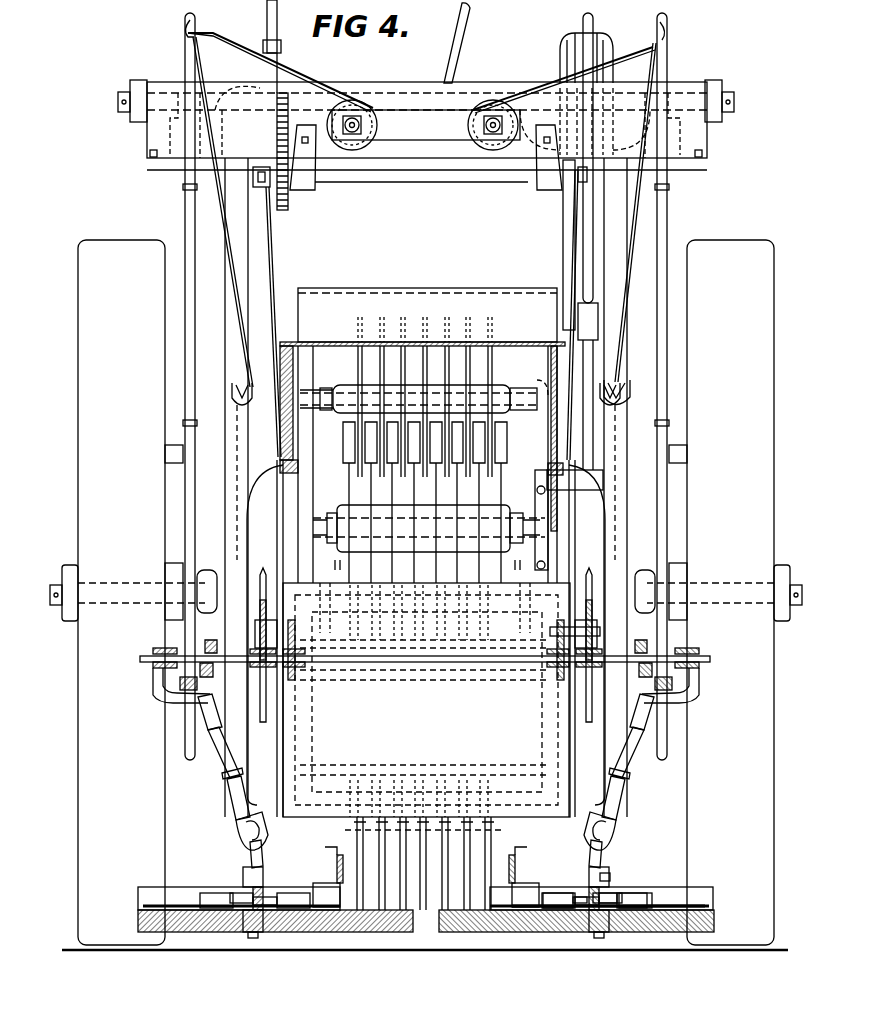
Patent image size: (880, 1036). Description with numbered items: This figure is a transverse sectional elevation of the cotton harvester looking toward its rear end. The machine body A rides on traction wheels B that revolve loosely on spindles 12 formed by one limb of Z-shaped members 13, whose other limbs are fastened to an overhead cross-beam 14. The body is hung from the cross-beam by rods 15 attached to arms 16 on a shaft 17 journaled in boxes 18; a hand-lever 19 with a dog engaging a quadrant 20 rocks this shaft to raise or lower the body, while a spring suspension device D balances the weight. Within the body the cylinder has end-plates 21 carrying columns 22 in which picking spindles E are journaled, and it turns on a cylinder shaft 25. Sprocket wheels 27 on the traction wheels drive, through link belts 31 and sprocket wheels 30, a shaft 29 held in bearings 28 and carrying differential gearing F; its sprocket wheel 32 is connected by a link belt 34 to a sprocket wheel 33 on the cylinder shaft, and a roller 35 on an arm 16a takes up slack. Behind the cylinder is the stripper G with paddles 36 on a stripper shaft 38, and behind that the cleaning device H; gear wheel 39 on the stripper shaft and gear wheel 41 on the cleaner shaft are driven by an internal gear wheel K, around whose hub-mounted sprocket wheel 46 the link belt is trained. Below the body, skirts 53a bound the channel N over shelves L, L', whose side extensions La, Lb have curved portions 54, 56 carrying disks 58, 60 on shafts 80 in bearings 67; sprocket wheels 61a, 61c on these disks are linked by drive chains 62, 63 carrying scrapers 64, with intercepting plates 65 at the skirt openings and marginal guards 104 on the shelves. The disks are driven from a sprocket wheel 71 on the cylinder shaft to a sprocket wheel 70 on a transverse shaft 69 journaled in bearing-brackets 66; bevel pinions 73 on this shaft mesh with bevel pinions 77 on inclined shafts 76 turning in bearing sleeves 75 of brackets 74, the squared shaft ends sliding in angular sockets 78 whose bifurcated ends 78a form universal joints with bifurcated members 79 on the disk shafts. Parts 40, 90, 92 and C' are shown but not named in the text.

The spindle 12 is at (53, 580).
The Z-shaped member 13 is at (250, 233).
The cross-beam 14 is at (168, 140).
The rod 15 is at (275, 271).
The arm 16 is at (253, 175).
The arm 16a is at (562, 272).
The shaft 17 is at (425, 186).
The box 18 is at (307, 193).
The hand-lever 19 is at (280, 48).
The quadrant 20 is at (286, 215).
The end-plate 21 is at (340, 697).
The column 22 is at (383, 760).
The cylinder shaft 25 is at (608, 636).
The sprocket wheel 27 is at (182, 504).
The bearing 28 is at (135, 80).
The shaft 29 is at (117, 100).
The sprocket wheel 30 is at (183, 58).
The link belt 31 is at (183, 218).
The sprocket wheel 32 is at (595, 22).
The sprocket wheel 33 is at (588, 728).
The link belt 34 is at (595, 285).
The roller 35 is at (590, 322).
The paddle 36 is at (497, 444).
The stripper shaft 38 is at (332, 513).
The gear wheel 39 is at (545, 556).
The bearing 40 is at (322, 388).
The gear wheel 41 is at (540, 400).
The sprocket wheel 46 is at (596, 452).
The skirt 53a is at (335, 874).
The curved portion 54 is at (135, 907).
The curved portion 56 is at (714, 913).
The circular disk 58 is at (182, 902).
The circular disk 60 is at (693, 909).
The sprocket wheel 61a is at (237, 893).
The sprocket wheel 61c is at (612, 897).
The drive chain 62 is at (267, 897).
The drive chain 63 is at (580, 896).
The scraper 64 is at (213, 897).
The intercepting plate 65 is at (424, 897).
The bearing-bracket 66 is at (295, 676).
The bearing 67 is at (258, 924).
The transverse shaft 69 is at (138, 658).
The sprocket wheel 70 is at (263, 724).
The sprocket wheel 71 is at (263, 566).
The bevel pinion 73 is at (210, 643).
The bracket 74 is at (150, 691).
The bearing sleeve 75 is at (203, 710).
The inclined shaft 76 is at (220, 760).
The bevel pinion 77 is at (205, 683).
The angular socket 78 is at (235, 795).
The bifurcated end 78a is at (616, 828).
The bifurcated member 79 is at (250, 853).
The shaft 80 is at (258, 877).
The plate 90 is at (300, 467).
The lever 92 is at (478, 34).
The marginal guard 104 is at (137, 893).
The machine body A is at (424, 704).
The traction wheel B is at (418, 395).
The chamber C' is at (467, 734).
The spring suspension device D is at (686, 45).
The picking spindle E is at (410, 872).
The differential gearing F is at (560, 52).
The stripper G is at (510, 482).
The cleaning device H is at (476, 366).
The internal gear wheel K is at (582, 424).
The shelf L is at (383, 963).
The shelf L' is at (481, 963).
The side extension La is at (228, 934).
The side extension Lb is at (643, 934).
The channel N is at (442, 881).